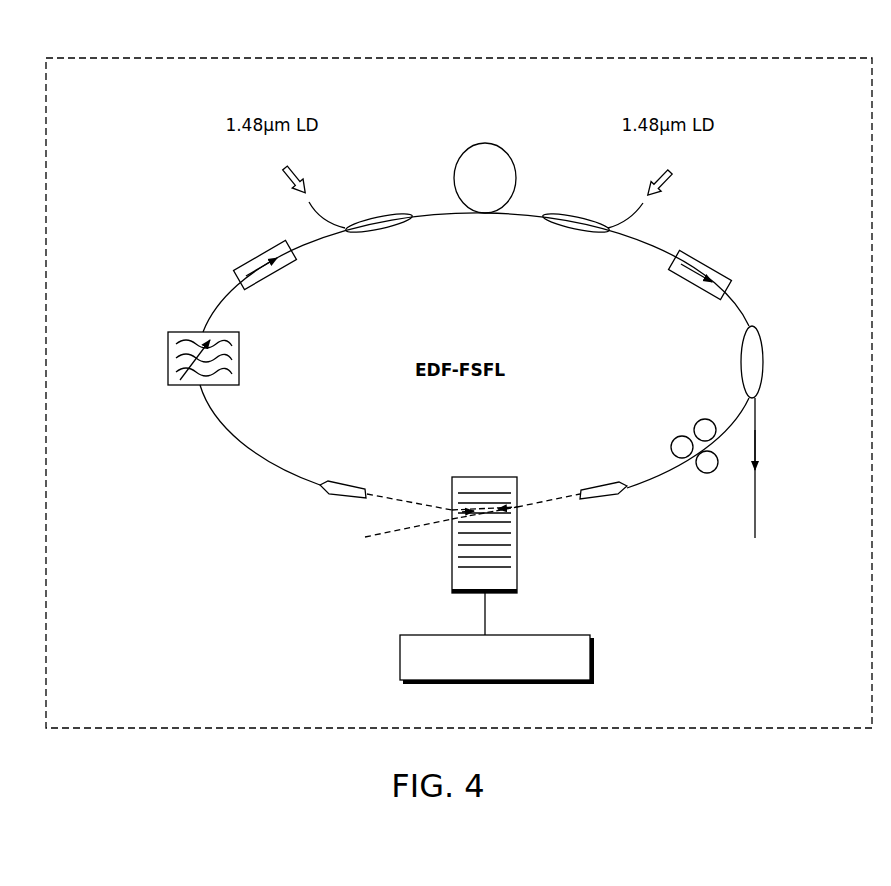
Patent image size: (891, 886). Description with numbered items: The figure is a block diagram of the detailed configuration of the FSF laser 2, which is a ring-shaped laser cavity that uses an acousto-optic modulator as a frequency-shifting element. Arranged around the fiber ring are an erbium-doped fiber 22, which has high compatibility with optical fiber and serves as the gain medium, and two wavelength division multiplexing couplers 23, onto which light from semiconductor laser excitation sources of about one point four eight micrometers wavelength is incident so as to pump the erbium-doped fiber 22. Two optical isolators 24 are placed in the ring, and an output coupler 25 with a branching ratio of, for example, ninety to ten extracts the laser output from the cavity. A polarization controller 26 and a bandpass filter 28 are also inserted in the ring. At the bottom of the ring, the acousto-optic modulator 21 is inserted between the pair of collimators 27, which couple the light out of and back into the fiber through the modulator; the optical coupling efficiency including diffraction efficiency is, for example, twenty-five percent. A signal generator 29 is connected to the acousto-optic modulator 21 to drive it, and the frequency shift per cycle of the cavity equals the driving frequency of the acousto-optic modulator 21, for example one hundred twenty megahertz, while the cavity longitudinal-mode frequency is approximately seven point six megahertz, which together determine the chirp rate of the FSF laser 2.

The FSF laser 2 is at (779, 56).
The acousto-optic modulator 21 is at (511, 575).
The erbium-doped fiber 22 is at (500, 167).
The wavelength division multiplexing couplers 23 is at (378, 214).
The optical isolators 24 is at (260, 257).
The output coupler 25 is at (755, 362).
The polarization controller 26 is at (708, 474).
The collimators 27 is at (336, 499).
The bandpass filter 28 is at (178, 386).
The signal generator 29 is at (566, 694).